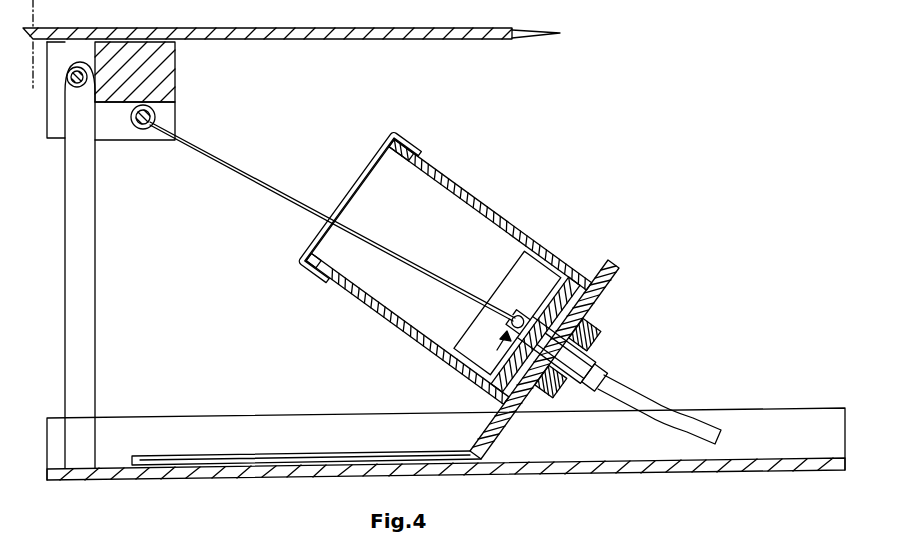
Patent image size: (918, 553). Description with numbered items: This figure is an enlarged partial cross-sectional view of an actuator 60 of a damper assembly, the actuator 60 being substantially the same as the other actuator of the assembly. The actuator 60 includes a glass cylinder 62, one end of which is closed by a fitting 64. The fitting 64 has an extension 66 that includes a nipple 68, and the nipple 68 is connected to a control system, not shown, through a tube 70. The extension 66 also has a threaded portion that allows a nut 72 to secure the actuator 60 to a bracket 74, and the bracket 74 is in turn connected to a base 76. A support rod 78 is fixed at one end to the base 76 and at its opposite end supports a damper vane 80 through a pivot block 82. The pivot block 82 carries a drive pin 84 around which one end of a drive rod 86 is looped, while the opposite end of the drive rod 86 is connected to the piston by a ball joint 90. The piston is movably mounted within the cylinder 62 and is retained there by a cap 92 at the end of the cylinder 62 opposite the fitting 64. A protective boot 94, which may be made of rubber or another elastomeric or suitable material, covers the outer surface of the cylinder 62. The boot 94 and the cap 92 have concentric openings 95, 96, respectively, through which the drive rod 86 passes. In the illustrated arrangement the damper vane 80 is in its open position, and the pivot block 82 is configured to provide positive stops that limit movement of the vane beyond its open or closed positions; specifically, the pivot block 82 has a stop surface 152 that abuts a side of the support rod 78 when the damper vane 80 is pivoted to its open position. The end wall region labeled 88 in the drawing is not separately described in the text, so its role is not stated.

The actuator 60 is at (519, 143).
The glass cylinder 62 is at (500, 202).
The fitting 64 is at (598, 300).
The extension 66 is at (590, 352).
The nipple 68 is at (612, 362).
The tube 70 is at (705, 432).
The nut 72 is at (595, 326).
The bracket 74 is at (300, 460).
The base 76 is at (570, 428).
The support rod 78 is at (73, 352).
The damper vane 80 is at (232, 40).
The pivot block 82 is at (160, 76).
The drive pin 84 is at (135, 126).
The drive rod 86 is at (213, 160).
The end wall 88 is at (553, 253).
The ball joint 90 is at (475, 353).
The cap 92 is at (405, 145).
The protective boot 94 is at (345, 293).
The opening 95 is at (350, 192).
The opening 96 is at (372, 176).
The stop surface 152 is at (95, 92).